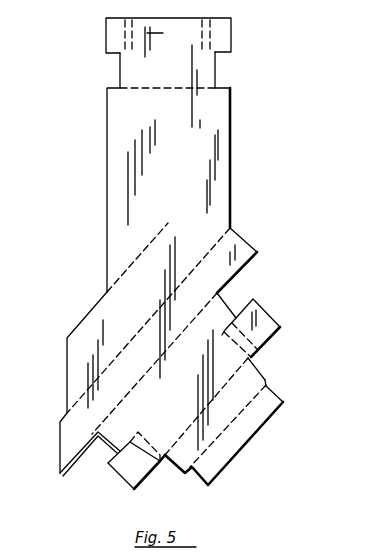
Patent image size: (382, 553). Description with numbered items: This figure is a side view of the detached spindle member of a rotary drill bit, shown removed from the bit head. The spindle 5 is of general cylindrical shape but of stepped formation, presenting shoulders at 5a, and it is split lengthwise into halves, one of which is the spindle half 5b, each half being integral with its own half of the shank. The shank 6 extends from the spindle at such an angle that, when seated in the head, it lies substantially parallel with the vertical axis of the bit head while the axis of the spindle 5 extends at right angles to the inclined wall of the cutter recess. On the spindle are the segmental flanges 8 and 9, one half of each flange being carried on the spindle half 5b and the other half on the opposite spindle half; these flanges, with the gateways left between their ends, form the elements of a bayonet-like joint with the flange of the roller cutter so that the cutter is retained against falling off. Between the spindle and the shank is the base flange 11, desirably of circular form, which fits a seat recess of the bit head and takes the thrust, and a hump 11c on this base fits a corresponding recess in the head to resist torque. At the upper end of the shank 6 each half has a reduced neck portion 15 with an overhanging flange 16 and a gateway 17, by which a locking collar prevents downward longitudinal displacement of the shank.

The spindle 5 is at (210, 428).
The shoulders 5a is at (266, 380).
The spindle half 5b is at (210, 318).
The shank 6 is at (230, 118).
The segmental flange 8 is at (128, 478).
The segmental flange 9 is at (267, 311).
The base flange 11 is at (231, 229).
The hump 11c is at (88, 333).
The reduced neck portion 15 is at (215, 68).
The overhanging flange 16 is at (231, 28).
The gateway 17 is at (137, 36).